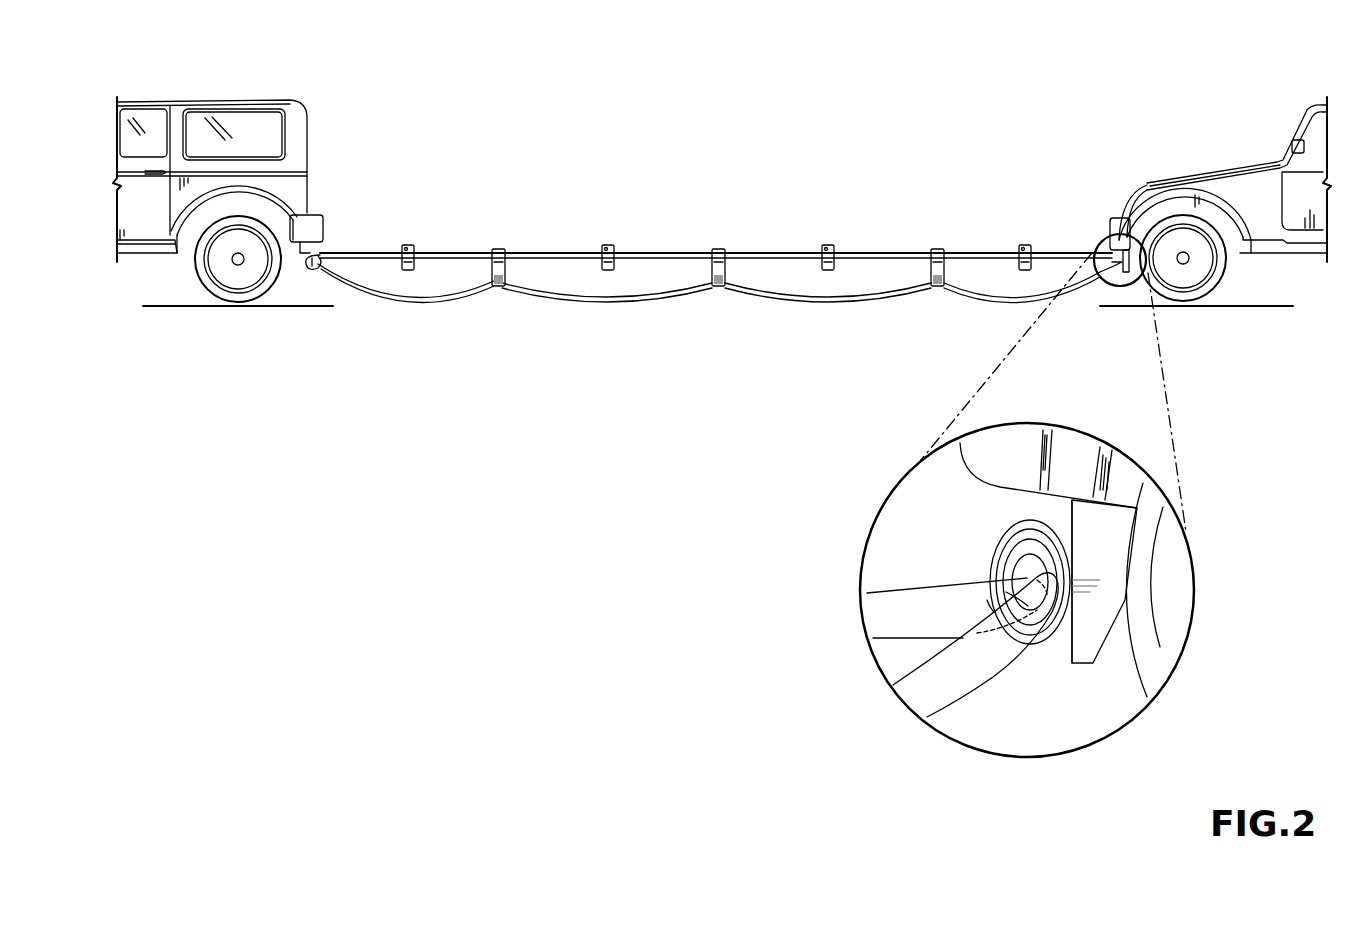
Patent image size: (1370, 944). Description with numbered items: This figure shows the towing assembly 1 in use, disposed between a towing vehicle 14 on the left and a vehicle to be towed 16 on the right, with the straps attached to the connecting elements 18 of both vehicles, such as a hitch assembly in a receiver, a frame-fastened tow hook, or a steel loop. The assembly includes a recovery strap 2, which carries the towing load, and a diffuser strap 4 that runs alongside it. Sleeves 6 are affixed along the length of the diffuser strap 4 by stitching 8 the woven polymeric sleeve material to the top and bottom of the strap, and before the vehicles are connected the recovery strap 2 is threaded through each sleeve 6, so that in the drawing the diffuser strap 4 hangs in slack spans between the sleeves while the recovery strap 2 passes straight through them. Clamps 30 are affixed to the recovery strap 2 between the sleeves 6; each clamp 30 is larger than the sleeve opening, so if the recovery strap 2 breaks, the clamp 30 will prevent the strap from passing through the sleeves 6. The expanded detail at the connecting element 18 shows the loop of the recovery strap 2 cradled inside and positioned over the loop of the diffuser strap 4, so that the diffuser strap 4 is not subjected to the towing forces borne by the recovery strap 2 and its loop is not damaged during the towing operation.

The towing assembly 1 is at (522, 114).
The recovery strap 2 is at (557, 258).
The diffuser strap 4 is at (558, 296).
The sleeves 6 is at (498, 249).
The stitching 8 is at (935, 285).
The towing vehicle 14 is at (242, 100).
The vehicle to be towed 16 is at (1225, 163).
The connecting elements 18 is at (308, 263).
The clamp 30 is at (408, 245).